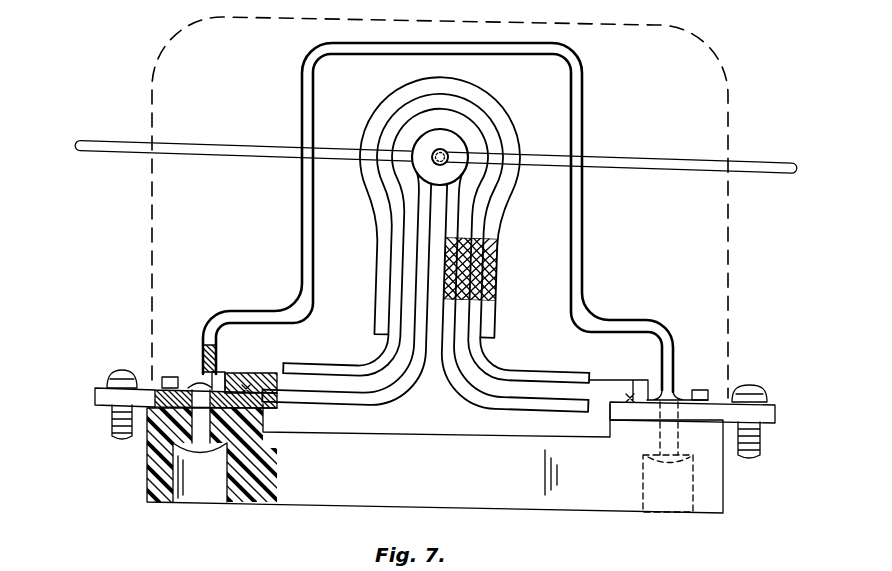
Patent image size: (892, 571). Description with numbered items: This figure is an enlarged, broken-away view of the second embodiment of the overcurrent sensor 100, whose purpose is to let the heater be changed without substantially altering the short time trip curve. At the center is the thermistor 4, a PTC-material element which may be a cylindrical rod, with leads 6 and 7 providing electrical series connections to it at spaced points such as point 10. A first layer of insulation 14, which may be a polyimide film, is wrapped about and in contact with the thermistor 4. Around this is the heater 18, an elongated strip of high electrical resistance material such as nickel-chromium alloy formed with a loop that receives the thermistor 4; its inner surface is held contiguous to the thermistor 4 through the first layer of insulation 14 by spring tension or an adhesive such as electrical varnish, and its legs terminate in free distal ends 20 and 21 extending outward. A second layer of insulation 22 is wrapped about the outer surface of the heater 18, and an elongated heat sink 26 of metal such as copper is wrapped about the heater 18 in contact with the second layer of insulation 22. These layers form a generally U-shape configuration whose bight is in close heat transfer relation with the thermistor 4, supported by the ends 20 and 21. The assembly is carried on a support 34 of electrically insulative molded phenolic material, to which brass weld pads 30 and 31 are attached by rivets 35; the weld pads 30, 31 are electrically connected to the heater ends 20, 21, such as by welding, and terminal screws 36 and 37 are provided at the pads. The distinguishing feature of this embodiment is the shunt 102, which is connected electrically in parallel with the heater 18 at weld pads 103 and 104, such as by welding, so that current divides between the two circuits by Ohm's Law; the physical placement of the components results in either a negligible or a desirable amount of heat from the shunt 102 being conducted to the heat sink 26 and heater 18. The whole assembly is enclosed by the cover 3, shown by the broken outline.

The overcurrent sensor 100 is at (136, 62).
The cover 3 is at (722, 74).
The shunt 102 is at (301, 98).
The weld pad 103 is at (186, 388).
The weld pad 104 is at (700, 390).
The lead 6 is at (108, 144).
The lead 7 is at (773, 157).
The heat sink 26 is at (513, 128).
The second layer of insulation 22 is at (481, 113).
The heater 18 is at (408, 118).
The first layer of insulation 14 is at (405, 146).
The thermistor 4 is at (457, 168).
The spaced point 10 is at (428, 160).
The free distal end 20 is at (238, 378).
The free distal end 21 is at (637, 388).
The weld pad 30 is at (95, 396).
The weld pad 31 is at (777, 410).
The support 34 is at (716, 482).
The rivet 35 is at (200, 447).
The terminal screw 36 is at (118, 370).
The terminal screw 37 is at (762, 390).